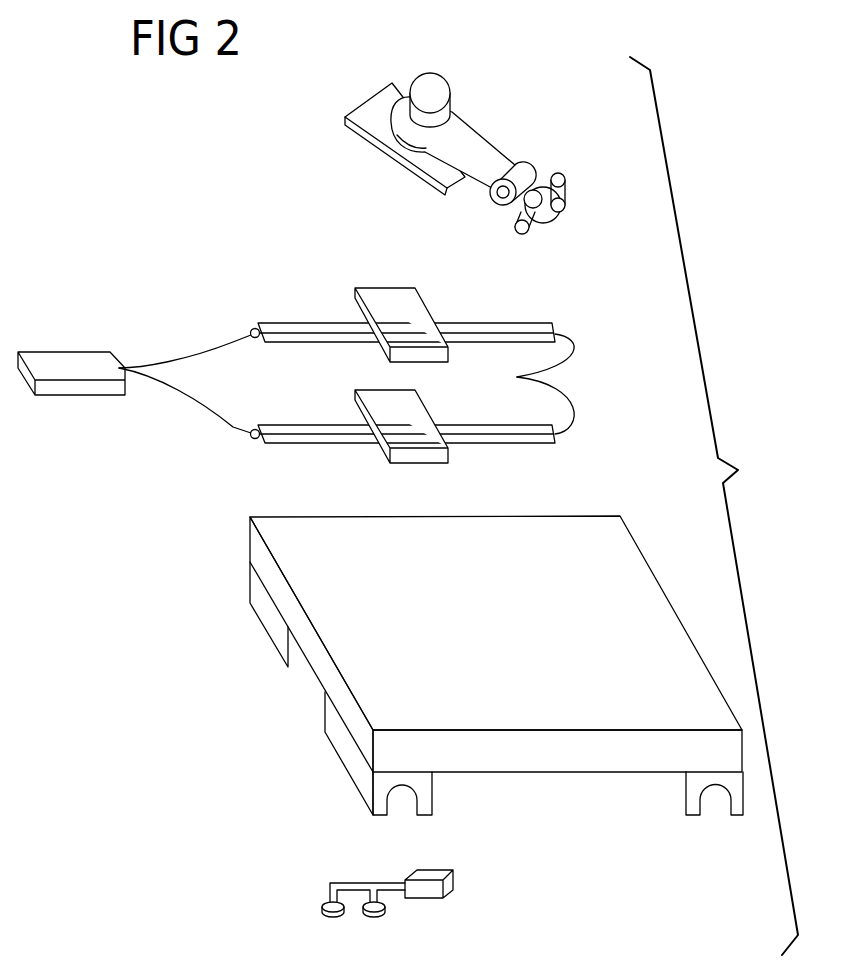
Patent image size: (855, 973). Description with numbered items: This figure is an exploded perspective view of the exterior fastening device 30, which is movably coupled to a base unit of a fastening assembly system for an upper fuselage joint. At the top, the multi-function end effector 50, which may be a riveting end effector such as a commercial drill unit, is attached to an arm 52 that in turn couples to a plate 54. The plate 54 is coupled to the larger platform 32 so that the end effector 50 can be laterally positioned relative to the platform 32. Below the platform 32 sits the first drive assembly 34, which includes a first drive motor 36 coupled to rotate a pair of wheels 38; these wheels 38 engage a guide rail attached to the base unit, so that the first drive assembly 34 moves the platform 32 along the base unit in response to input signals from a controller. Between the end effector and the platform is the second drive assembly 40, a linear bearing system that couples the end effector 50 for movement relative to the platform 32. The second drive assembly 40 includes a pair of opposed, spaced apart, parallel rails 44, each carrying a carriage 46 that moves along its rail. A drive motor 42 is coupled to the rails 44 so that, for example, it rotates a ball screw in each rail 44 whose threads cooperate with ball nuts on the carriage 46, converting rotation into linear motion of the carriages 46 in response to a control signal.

The exterior fastening device 30 is at (655, 348).
The platform 32 is at (645, 605).
The first drive assembly 34 is at (266, 898).
The first drive motor 36 is at (450, 882).
The wheels 38 is at (333, 917).
The second drive assembly 40 is at (126, 285).
The drive motor 42 is at (72, 370).
The rails 44 is at (346, 383).
The carriage 46 is at (393, 325).
The multi-function end effector 50 is at (567, 195).
The arm 52 is at (456, 115).
The plate 54 is at (376, 97).